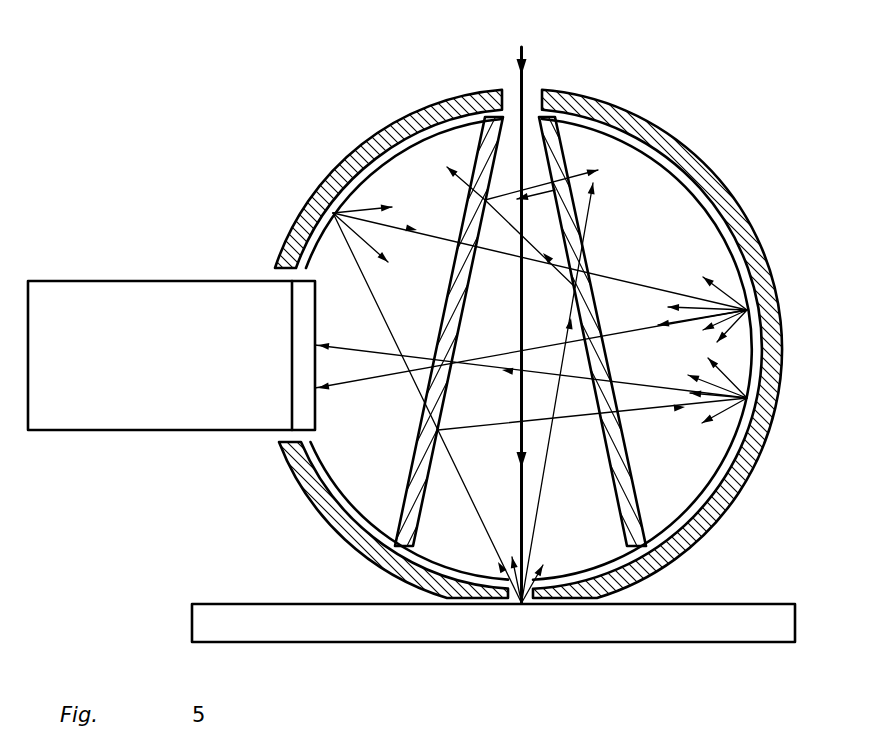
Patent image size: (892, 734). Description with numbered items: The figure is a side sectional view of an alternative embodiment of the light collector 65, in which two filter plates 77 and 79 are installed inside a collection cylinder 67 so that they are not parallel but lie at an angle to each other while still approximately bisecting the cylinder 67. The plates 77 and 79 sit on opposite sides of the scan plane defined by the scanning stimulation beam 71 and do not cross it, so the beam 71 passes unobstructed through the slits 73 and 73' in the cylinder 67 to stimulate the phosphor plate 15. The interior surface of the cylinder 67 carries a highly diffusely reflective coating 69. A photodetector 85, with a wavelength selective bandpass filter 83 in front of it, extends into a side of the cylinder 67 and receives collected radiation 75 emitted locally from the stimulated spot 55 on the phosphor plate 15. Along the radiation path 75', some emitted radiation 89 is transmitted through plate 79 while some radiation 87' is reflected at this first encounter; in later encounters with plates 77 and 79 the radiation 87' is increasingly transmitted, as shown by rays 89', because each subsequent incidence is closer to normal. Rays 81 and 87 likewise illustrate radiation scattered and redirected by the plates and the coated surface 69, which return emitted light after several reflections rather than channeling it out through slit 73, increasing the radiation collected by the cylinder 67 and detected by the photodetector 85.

The phosphor plate 15 is at (797, 620).
The illuminated spot on sphere wall 55 is at (302, 212).
The integrating sphere reflectometer 65 is at (345, 52).
The collection cylinder 67 is at (703, 167).
The diffusely reflective coating 69 is at (402, 150).
The scanning stimulation beam 71 is at (524, 60).
The slit 73 is at (494, 54).
The slit 73' is at (570, 642).
The light rays to detector 75 is at (531, 364).
The radiation path 75' is at (558, 445).
The filter plate 77 is at (470, 193).
The filter plate 79 is at (633, 480).
The scattered light ray 81 is at (375, 262).
The wavelength selective bandpass filter 83 is at (298, 352).
The photodetector 85 is at (125, 280).
The light ray reflected by first plate 87 is at (540, 408).
The reflected radiation 87' is at (530, 243).
The transmitted emitted radiation 89 is at (605, 235).
The transmitted rays 89' is at (523, 168).